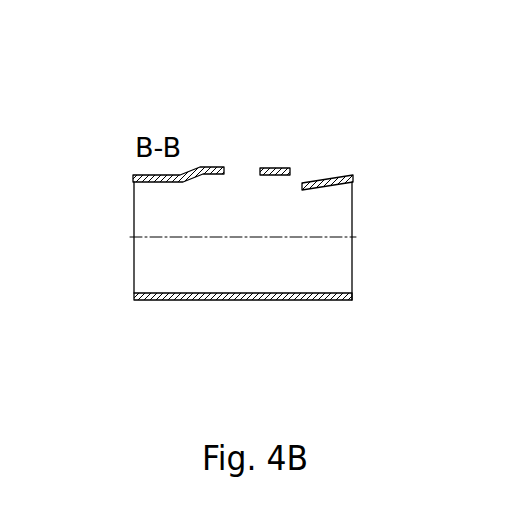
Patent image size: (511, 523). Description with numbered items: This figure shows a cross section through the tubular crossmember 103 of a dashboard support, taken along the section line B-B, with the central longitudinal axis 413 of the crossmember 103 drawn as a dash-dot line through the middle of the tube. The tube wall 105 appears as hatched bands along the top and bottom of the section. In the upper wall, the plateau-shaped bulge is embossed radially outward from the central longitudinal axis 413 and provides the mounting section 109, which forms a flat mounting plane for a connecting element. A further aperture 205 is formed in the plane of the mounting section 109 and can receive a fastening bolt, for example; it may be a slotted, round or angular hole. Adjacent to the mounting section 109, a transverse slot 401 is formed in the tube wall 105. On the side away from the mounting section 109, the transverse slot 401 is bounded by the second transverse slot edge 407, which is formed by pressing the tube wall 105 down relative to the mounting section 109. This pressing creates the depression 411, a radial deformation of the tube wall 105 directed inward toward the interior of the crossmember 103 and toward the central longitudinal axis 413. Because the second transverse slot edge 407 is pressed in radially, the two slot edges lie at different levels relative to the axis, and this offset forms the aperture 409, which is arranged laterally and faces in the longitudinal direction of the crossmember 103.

The tubular crossmember 103 is at (322, 300).
The tube wall 105 is at (153, 183).
The mounting section 109 is at (217, 173).
The further aperture 205 is at (235, 172).
The transverse slot 401 is at (302, 162).
The second transverse slot edge 407 is at (302, 190).
The aperture 409 is at (289, 176).
The depression 411 is at (309, 182).
The central longitudinal axis 413 is at (342, 238).